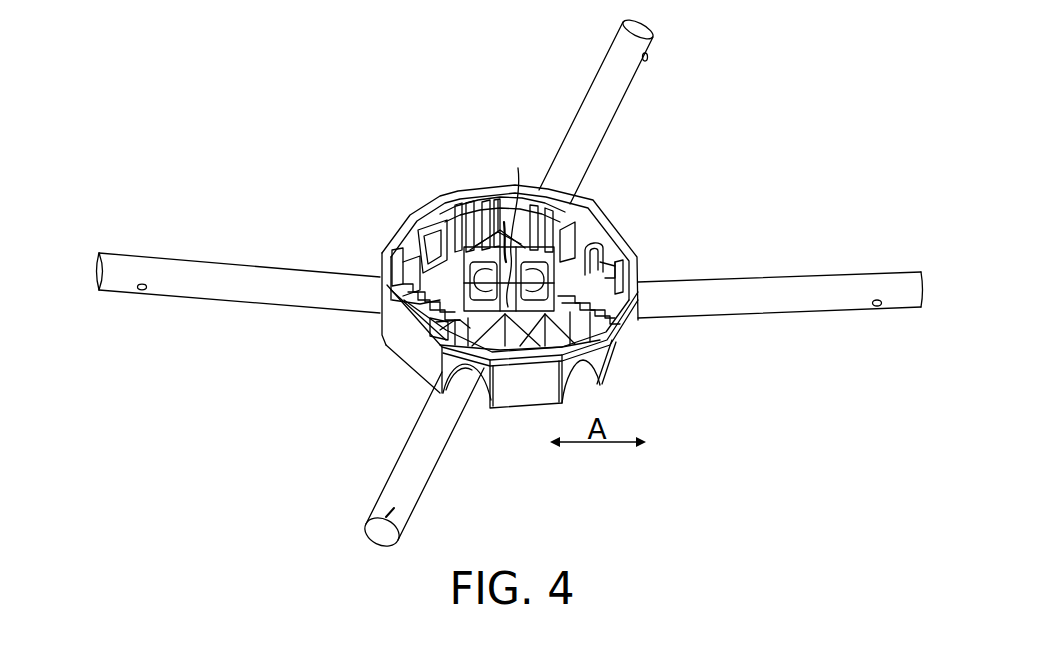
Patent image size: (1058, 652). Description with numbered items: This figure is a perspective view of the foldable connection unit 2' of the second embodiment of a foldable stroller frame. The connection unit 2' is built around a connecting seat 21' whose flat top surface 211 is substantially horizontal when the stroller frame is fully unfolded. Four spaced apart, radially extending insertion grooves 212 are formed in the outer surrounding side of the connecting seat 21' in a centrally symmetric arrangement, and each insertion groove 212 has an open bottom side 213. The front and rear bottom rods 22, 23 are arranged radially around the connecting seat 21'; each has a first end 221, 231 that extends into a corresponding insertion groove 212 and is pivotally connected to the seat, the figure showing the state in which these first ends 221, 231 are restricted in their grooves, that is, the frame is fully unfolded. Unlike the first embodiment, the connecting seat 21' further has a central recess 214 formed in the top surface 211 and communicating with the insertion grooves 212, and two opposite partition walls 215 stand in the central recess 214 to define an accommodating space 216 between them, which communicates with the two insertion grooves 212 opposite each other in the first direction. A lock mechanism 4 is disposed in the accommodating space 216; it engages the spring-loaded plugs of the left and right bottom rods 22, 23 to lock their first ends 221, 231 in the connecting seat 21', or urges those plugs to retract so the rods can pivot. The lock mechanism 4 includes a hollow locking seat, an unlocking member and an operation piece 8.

The connection unit 2' is at (457, 198).
The connecting seat 21' is at (502, 255).
The front bottom rod 22 is at (250, 266).
The rear bottom rod 23 is at (637, 76).
The top surface 211 is at (597, 233).
The insertion groove 212 is at (446, 393).
The open bottom side 213 is at (471, 402).
The central recess 214 is at (478, 228).
The partition wall 215 is at (488, 257).
The accommodating space 216 is at (553, 258).
The first end 221 is at (410, 253).
The first end 231 is at (593, 290).
The lock mechanism 4 is at (556, 298).
The operation piece 8 is at (550, 264).